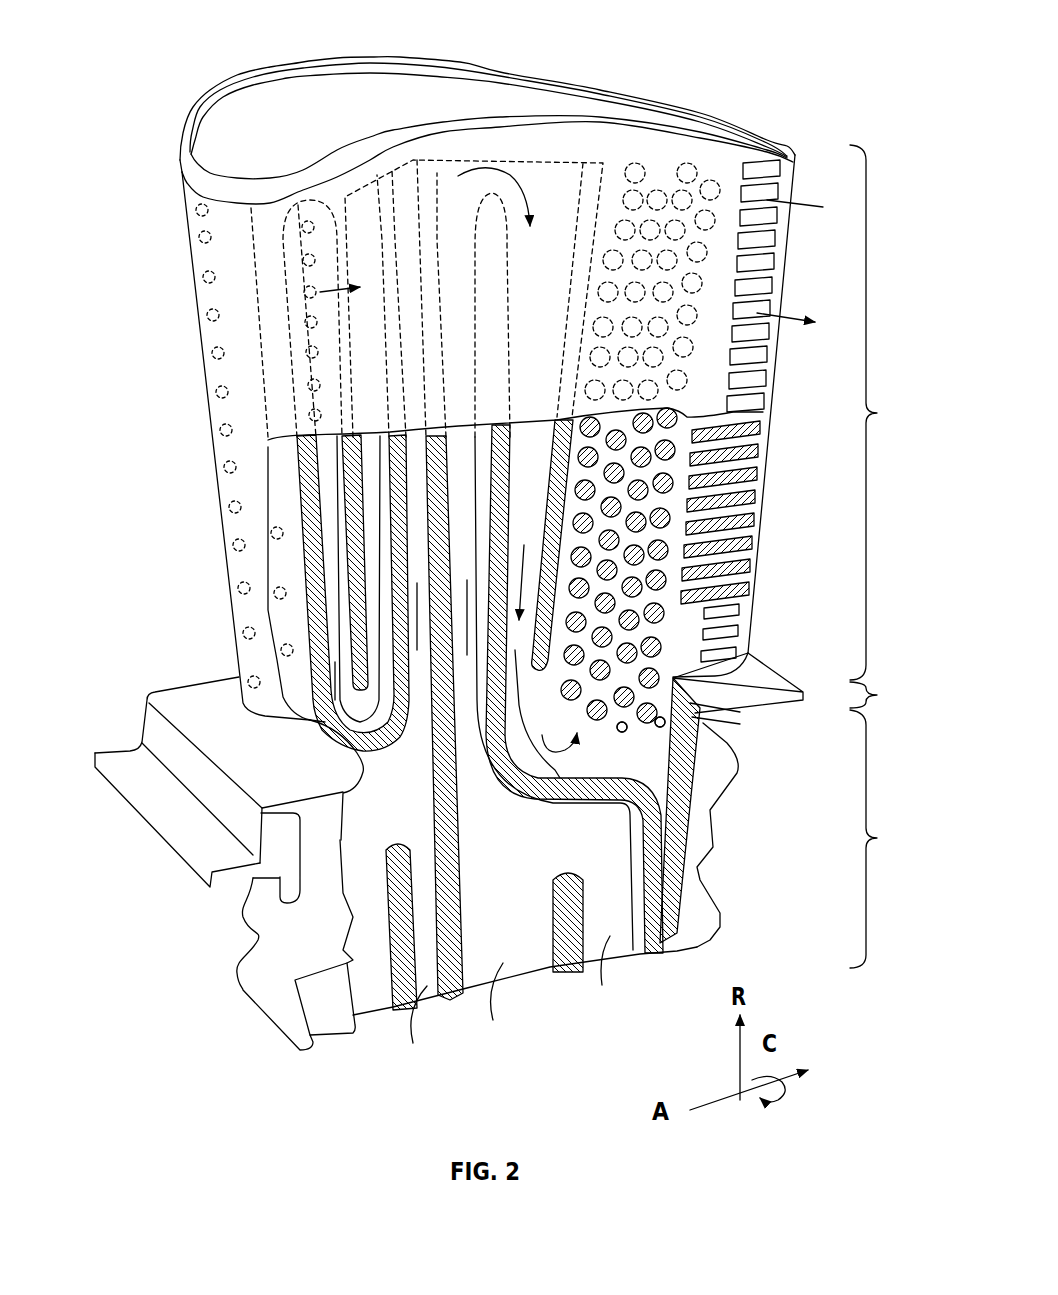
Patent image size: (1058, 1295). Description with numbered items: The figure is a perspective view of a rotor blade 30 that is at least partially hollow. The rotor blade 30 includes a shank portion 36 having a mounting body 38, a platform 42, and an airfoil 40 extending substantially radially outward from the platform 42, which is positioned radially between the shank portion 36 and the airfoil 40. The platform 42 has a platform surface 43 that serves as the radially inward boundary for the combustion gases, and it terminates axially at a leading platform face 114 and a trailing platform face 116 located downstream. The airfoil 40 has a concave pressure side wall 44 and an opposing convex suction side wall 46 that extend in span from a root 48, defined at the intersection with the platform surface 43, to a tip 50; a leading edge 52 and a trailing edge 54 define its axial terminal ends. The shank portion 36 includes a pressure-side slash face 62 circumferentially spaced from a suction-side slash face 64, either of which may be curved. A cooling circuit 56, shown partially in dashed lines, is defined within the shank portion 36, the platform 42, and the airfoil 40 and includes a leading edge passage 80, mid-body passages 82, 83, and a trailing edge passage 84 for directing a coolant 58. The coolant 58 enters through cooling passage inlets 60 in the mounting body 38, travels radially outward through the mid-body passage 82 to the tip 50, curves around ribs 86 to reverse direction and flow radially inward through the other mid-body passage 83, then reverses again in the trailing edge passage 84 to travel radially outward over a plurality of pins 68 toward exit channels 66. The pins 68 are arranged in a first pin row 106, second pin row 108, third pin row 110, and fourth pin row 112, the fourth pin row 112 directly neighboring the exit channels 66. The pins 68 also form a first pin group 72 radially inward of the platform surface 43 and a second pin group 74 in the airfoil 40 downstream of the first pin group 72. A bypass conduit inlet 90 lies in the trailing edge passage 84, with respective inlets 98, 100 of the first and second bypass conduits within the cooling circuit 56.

The rotor blade 30 is at (70, 244).
The tip 50 is at (182, 186).
The pressure side wall 44 is at (568, 150).
The suction side wall 46 is at (200, 289).
The leading edge 52 is at (210, 490).
The leading edge passage 80 is at (325, 535).
The rib 86 is at (367, 233).
The coolant 58 is at (533, 230).
The mid-body passage 82 is at (529, 718).
The mid-body passage 83 is at (574, 686).
The cooling circuit 56 is at (481, 892).
The cooling passage inlet 60 is at (375, 1016).
The trailing edge 54 is at (765, 412).
The pins 68 is at (733, 180).
The exit channels 66 is at (770, 241).
The trailing edge passage 84 is at (686, 420).
The second pin group 74 is at (657, 550).
The second pin row 108 is at (657, 200).
The first pin row 106 is at (633, 177).
The third pin row 110 is at (690, 163).
The fourth pin row 112 is at (717, 183).
The trailing platform face 116 is at (790, 675).
The first pin group 72 is at (630, 692).
The inlet 90 is at (628, 735).
The inlet 98 is at (622, 727).
The inlet 100 is at (667, 730).
The suction-side slash face 64 is at (145, 696).
The platform surface 43 is at (205, 700).
The root 48 is at (245, 692).
The platform 42 is at (160, 729).
The leading platform face 114 is at (215, 795).
The pressure-side slash face 62 is at (317, 860).
The mounting body 38 is at (265, 990).
The airfoil 40 is at (877, 412).
The shank portion 36 is at (877, 839).